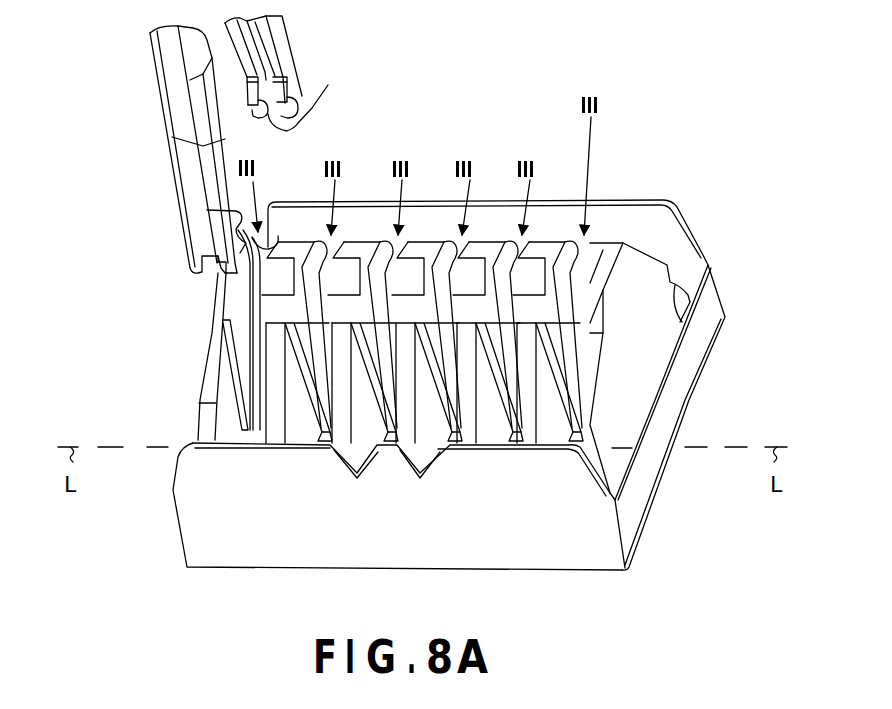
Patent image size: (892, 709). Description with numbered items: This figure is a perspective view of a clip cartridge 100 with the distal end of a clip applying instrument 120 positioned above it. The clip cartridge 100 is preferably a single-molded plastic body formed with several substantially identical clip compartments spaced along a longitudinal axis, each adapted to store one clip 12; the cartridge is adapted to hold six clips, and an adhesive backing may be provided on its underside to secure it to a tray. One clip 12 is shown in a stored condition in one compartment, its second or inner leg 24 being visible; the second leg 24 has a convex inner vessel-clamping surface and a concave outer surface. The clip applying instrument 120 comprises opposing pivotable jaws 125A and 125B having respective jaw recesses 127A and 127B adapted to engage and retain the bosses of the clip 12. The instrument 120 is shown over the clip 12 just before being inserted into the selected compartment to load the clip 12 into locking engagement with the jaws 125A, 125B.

The clip cartridge 100 is at (776, 94).
The clip 12 is at (250, 292).
The second leg 24 is at (252, 370).
The clip applying instrument 120 is at (100, 90).
The jaw 125A is at (172, 175).
The jaw recess 127A is at (207, 210).
The jaw 125B is at (287, 38).
The jaw recess 127B is at (302, 97).